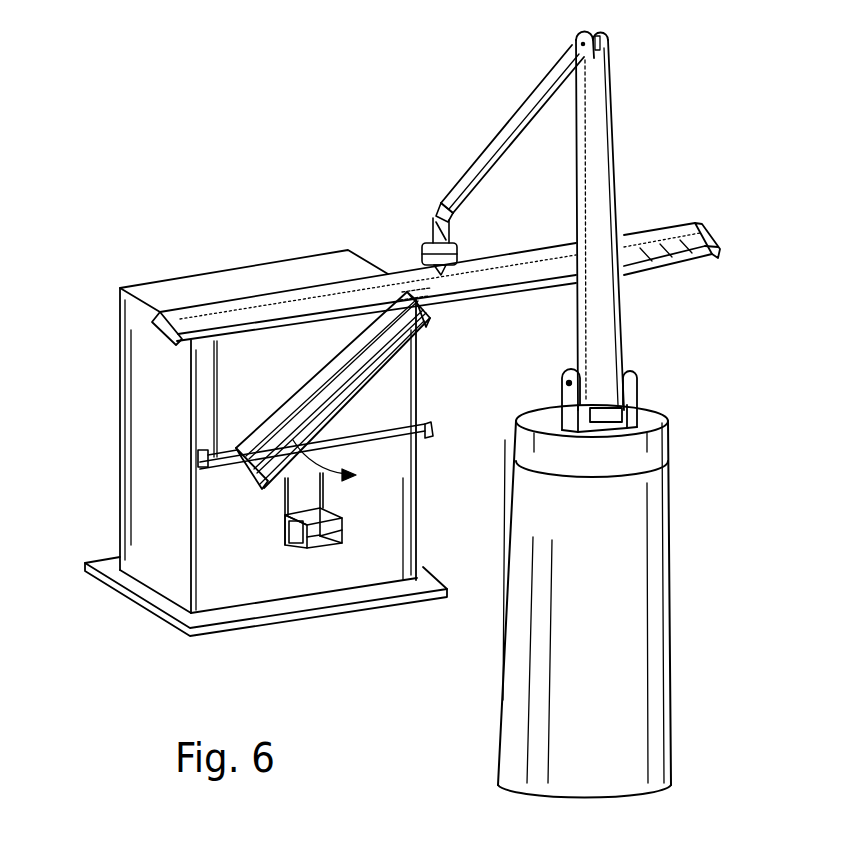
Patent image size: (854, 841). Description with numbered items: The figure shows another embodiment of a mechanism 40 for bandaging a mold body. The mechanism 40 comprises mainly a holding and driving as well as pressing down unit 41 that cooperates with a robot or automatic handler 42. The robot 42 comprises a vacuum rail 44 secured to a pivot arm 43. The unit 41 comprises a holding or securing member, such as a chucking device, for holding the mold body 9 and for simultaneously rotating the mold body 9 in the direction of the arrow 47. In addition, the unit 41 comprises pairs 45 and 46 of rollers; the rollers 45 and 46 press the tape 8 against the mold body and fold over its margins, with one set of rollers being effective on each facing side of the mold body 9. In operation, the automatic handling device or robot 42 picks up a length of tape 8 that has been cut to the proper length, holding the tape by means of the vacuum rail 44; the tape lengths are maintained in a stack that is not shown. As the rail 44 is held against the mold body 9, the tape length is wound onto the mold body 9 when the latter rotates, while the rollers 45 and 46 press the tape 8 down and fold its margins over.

The tape 8 is at (414, 298).
The mold body 9 is at (350, 348).
The mechanism for bandaging a mold body 40 is at (372, 68).
The holding and driving as well as pressing down unit 41 is at (141, 447).
The robot or automatic handler 42 is at (633, 551).
The pivot arm 43 is at (605, 150).
The vacuum rail 44 is at (672, 233).
The pair of rollers 45 is at (393, 420).
The pair of rollers 46 is at (343, 516).
The arrow 47 is at (342, 468).